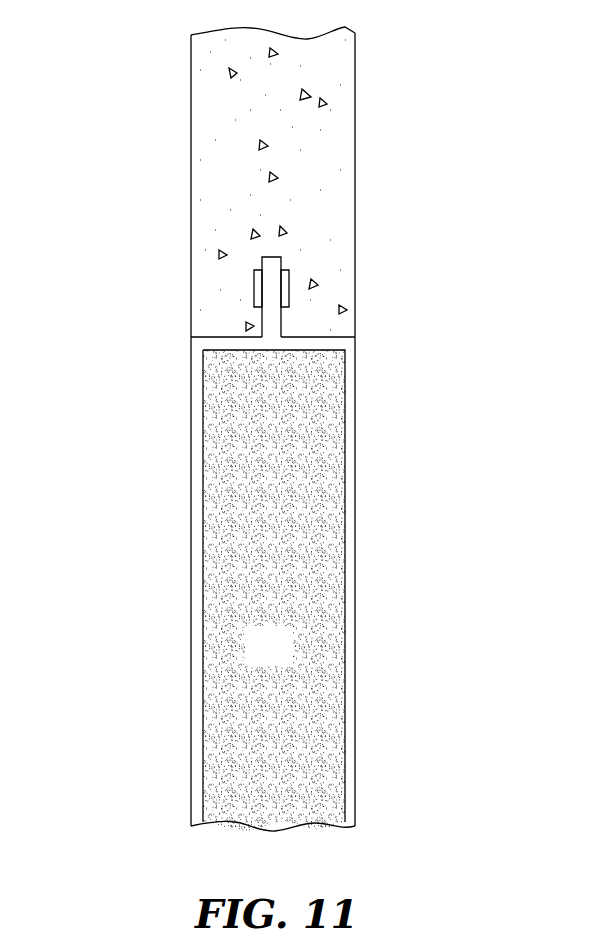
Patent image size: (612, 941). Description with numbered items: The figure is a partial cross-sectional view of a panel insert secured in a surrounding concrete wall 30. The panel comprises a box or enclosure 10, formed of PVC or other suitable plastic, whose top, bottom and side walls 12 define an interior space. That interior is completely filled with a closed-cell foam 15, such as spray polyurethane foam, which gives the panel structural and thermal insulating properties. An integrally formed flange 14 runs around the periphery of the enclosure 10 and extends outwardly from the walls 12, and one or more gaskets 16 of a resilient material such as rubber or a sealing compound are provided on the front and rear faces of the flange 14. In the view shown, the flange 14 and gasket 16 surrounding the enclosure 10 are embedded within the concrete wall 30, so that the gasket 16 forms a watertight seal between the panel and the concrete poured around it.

The enclosure 10 is at (192, 527).
The walls 12 is at (318, 337).
The flange 14 is at (271, 257).
The closed-cell foam 15 is at (285, 659).
The gasket 16 is at (254, 288).
The concrete wall 30 is at (335, 160).